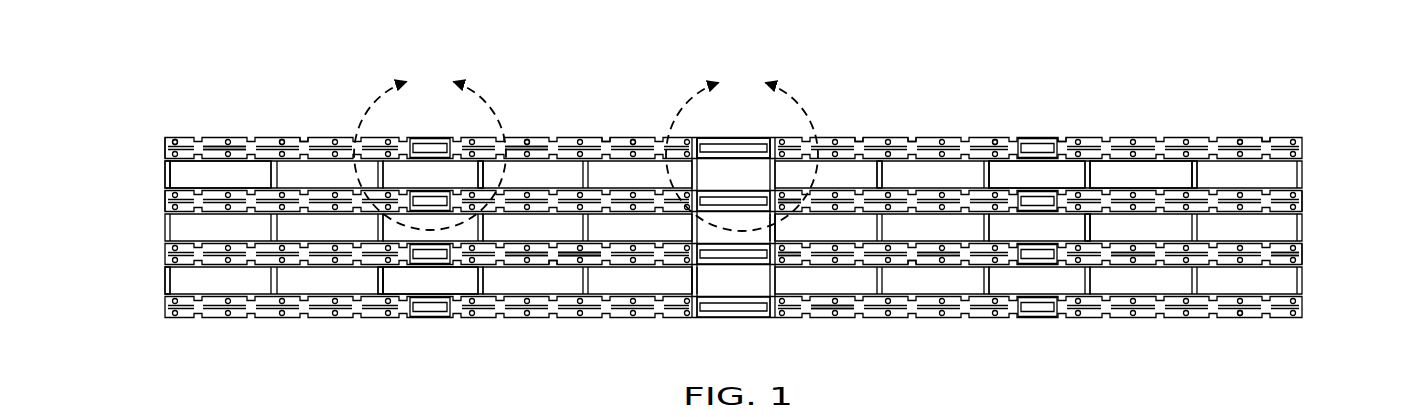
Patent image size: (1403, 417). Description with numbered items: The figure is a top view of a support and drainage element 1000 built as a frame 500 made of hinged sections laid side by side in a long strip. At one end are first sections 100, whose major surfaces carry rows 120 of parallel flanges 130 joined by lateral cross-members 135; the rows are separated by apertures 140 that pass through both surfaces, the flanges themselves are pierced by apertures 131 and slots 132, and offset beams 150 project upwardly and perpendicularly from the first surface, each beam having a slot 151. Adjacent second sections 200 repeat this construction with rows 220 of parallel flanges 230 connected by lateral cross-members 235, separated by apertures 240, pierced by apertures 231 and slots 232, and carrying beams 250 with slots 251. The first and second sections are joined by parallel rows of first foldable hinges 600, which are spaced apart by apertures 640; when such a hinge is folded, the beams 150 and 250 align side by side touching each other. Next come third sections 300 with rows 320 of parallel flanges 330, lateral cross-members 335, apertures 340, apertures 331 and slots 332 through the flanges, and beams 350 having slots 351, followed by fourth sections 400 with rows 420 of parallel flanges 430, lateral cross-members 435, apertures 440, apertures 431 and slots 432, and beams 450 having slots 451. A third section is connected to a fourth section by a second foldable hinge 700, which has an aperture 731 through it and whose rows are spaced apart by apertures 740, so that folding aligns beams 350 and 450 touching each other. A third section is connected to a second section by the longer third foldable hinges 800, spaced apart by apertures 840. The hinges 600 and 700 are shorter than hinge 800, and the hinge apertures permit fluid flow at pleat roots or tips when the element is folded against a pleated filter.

The support and drainage element 1000 is at (143, 352).
The frame 500 is at (156, 208).
The first section 100 is at (236, 316).
The rows of parallel flanges 120 is at (163, 143).
The parallel flanges 130 is at (213, 145).
The apertures 131 is at (282, 136).
The slots 132 is at (305, 142).
The lateral cross-members 135 is at (168, 173).
The apertures 140 is at (253, 175).
The beams 150 is at (168, 258).
The slot 151 is at (198, 148).
The second section 200 is at (472, 316).
The rows of parallel flanges 220 is at (515, 137).
The parallel flanges 230 is at (540, 258).
The apertures 231 is at (632, 137).
The slots 232 is at (608, 137).
The lateral cross-members 235 is at (477, 172).
The apertures 240 is at (538, 137).
The beams 250 is at (590, 248).
The slot 251 is at (540, 262).
The third section 300 is at (820, 316).
The rows of parallel flanges 320 is at (817, 195).
The parallel flanges 330 is at (932, 262).
The apertures 331 is at (993, 140).
The slots 332 is at (910, 140).
The lateral cross-members 335 is at (883, 168).
The apertures 340 is at (860, 140).
The beams 350 is at (925, 253).
The slot 351 is at (848, 310).
The fourth section 400 is at (1120, 316).
The rows of parallel flanges 420 is at (1304, 203).
The parallel flanges 430 is at (1152, 258).
The apertures 431 is at (1238, 137).
The slots 432 is at (1270, 137).
The lateral cross-members 435 is at (1197, 168).
The apertures 440 is at (1150, 173).
The beams 450 is at (1282, 256).
The slot 451 is at (1232, 314).
The first foldable hinge 600 is at (422, 126).
The apertures 640 is at (430, 279).
The second foldable hinge 700 is at (1037, 132).
The aperture 731 is at (1060, 143).
The apertures 740 is at (1037, 174).
The third foldable hinge 800 is at (742, 130).
The apertures 840 is at (733, 164).